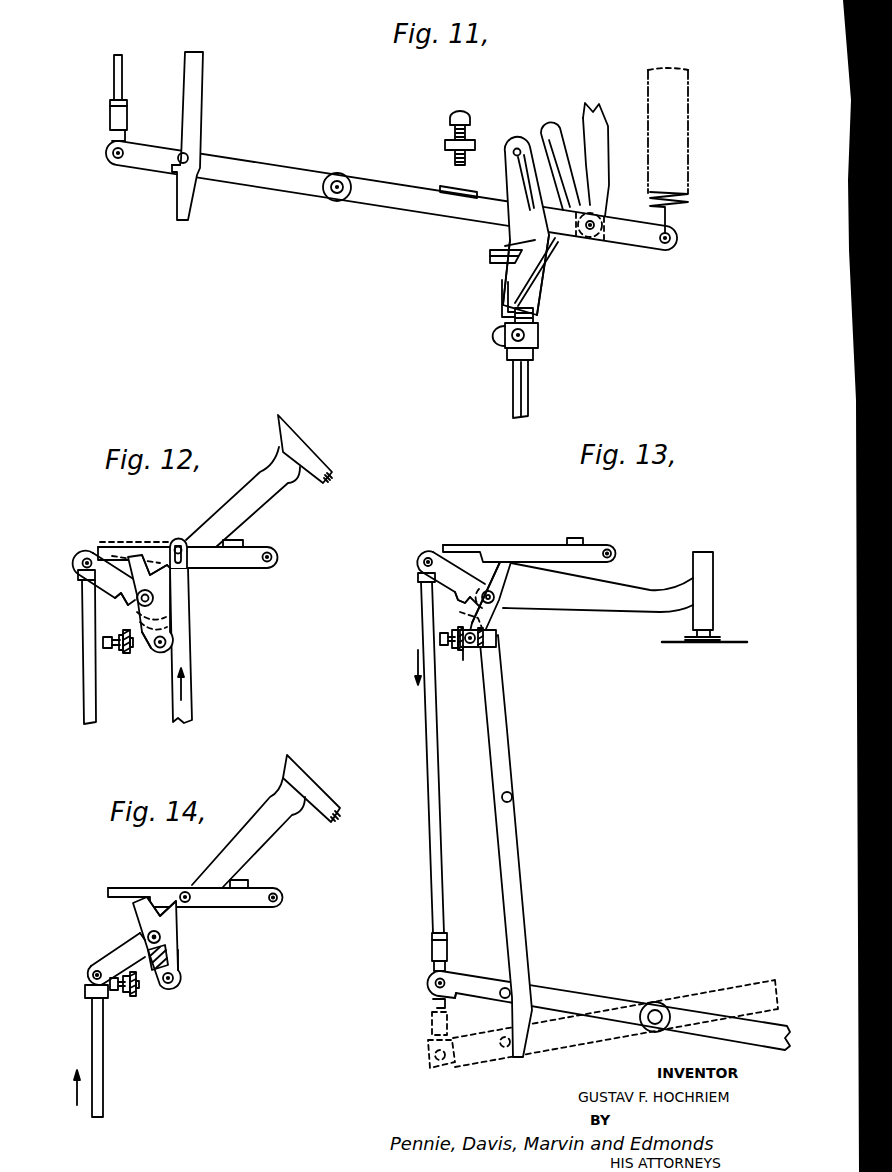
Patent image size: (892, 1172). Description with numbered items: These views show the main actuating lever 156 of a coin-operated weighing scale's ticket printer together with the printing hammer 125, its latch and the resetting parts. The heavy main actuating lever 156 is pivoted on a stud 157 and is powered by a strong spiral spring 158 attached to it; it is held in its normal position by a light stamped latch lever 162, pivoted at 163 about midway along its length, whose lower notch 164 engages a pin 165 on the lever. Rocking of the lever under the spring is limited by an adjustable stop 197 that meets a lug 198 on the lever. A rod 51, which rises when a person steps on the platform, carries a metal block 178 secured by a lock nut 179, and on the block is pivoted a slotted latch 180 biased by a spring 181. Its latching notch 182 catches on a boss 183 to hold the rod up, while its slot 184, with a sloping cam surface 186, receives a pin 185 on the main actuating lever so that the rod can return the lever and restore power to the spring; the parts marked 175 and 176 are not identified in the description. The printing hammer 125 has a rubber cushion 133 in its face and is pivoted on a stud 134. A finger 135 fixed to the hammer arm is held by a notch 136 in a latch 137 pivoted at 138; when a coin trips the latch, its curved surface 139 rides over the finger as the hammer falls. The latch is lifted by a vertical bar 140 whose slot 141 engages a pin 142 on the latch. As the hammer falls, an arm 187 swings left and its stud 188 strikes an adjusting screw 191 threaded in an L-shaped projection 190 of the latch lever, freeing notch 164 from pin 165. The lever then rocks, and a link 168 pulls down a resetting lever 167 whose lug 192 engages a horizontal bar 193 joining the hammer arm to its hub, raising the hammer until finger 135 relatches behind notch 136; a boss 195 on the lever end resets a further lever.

In FIG. 11, the rod 51 is at (527, 383).
In FIG. 12, the printing hammer 125 is at (296, 442).
In FIG. 13, the printing hammer 125 is at (714, 595).
In FIG. 14, the printing hammer 125 is at (292, 763).
In FIG. 12, the cushion 133 is at (334, 478).
In FIG. 12, the stud 134 is at (138, 605).
In FIG. 13, the stud 134 is at (495, 598).
In FIG. 14, the stud 134 is at (161, 939).
In FIG. 12, the finger 135 is at (132, 556).
In FIG. 13, the finger 135 is at (508, 572).
In FIG. 14, the finger 135 is at (138, 910).
In FIG. 12, the notch 136 is at (148, 563).
In FIG. 14, the notch 136 is at (156, 897).
In FIG. 12, the latch 137 is at (105, 547).
In FIG. 13, the latch 137 is at (458, 545).
In FIG. 14, the latch 137 is at (125, 888).
In FIG. 12, the latch pivot 138 is at (280, 557).
In FIG. 13, the latch pivot 138 is at (529, 550).
In FIG. 14, the latch pivot 138 is at (195, 893).
In FIG. 13, the curved surface 139 is at (500, 562).
In FIG. 12, the vertical bar 140 is at (191, 648).
In FIG. 12, the slot 141 is at (176, 541).
In FIG. 12, the pin 142 is at (205, 558).
In FIG. 14, the pin 142 is at (190, 903).
In FIG. 11, the main actuating lever 156 is at (377, 176).
In FIG. 13, the main actuating lever 156 is at (565, 1032).
In FIG. 11, the stud 157 is at (337, 201).
In FIG. 13, the stud 157 is at (657, 1010).
In FIG. 11, the spiral spring 158 is at (683, 172).
In FIG. 11, the latch lever 162 is at (201, 102).
In FIG. 13, the latch lever 162 is at (506, 738).
In FIG. 13, the pivot 163 is at (513, 797).
In FIG. 11, the notch 164 is at (173, 171).
In FIG. 13, the notch 164 is at (510, 1017).
In FIG. 11, the pin 165 is at (183, 153).
In FIG. 13, the pin 165 is at (504, 988).
In FIG. 12, the resetting lever 167 is at (98, 575).
In FIG. 13, the resetting lever 167 is at (425, 551).
In FIG. 14, the resetting lever 167 is at (118, 952).
In FIG. 11, the link 168 is at (113, 70).
In FIG. 12, the link 168 is at (85, 684).
In FIG. 13, the link 168 is at (430, 774).
In FIG. 14, the link 168 is at (103, 1088).
In FIG. 11, the spring 175 is at (545, 130).
In FIG. 11, the pivot 176 is at (595, 230).
In FIG. 11, the metal block 178 is at (525, 335).
In FIG. 11, the lock nut 179 is at (536, 352).
In FIG. 11, the slotted latch 180 is at (538, 293).
In FIG. 11, the spring 181 is at (527, 302).
In FIG. 11, the latching notch 182 is at (515, 240).
In FIG. 11, the boss 183 is at (490, 258).
In FIG. 11, the slot 184 is at (513, 185).
In FIG. 11, the pin 185 is at (529, 218).
In FIG. 11, the cam surface 186 is at (516, 150).
In FIG. 12, the arm 187 is at (170, 630).
In FIG. 13, the arm 187 is at (484, 626).
In FIG. 14, the arm 187 is at (175, 968).
In FIG. 12, the stud 188 is at (160, 648).
In FIG. 13, the stud 188 is at (492, 645).
In FIG. 14, the stud 188 is at (174, 980).
In FIG. 13, the L-shaped projection 190 is at (478, 662).
In FIG. 12, the adjusting screw 191 is at (133, 650).
In FIG. 13, the adjusting screw 191 is at (452, 650).
In FIG. 14, the adjusting screw 191 is at (137, 997).
In FIG. 12, the lug 192 is at (116, 601).
In FIG. 13, the lug 192 is at (452, 597).
In FIG. 14, the lug 192 is at (143, 972).
In FIG. 13, the horizontal bar 193 is at (462, 616).
In FIG. 14, the horizontal bar 193 is at (152, 972).
In FIG. 13, the boss 195 is at (432, 1002).
In FIG. 11, the adjustable stop 197 is at (453, 154).
In FIG. 11, the lug 198 is at (440, 195).